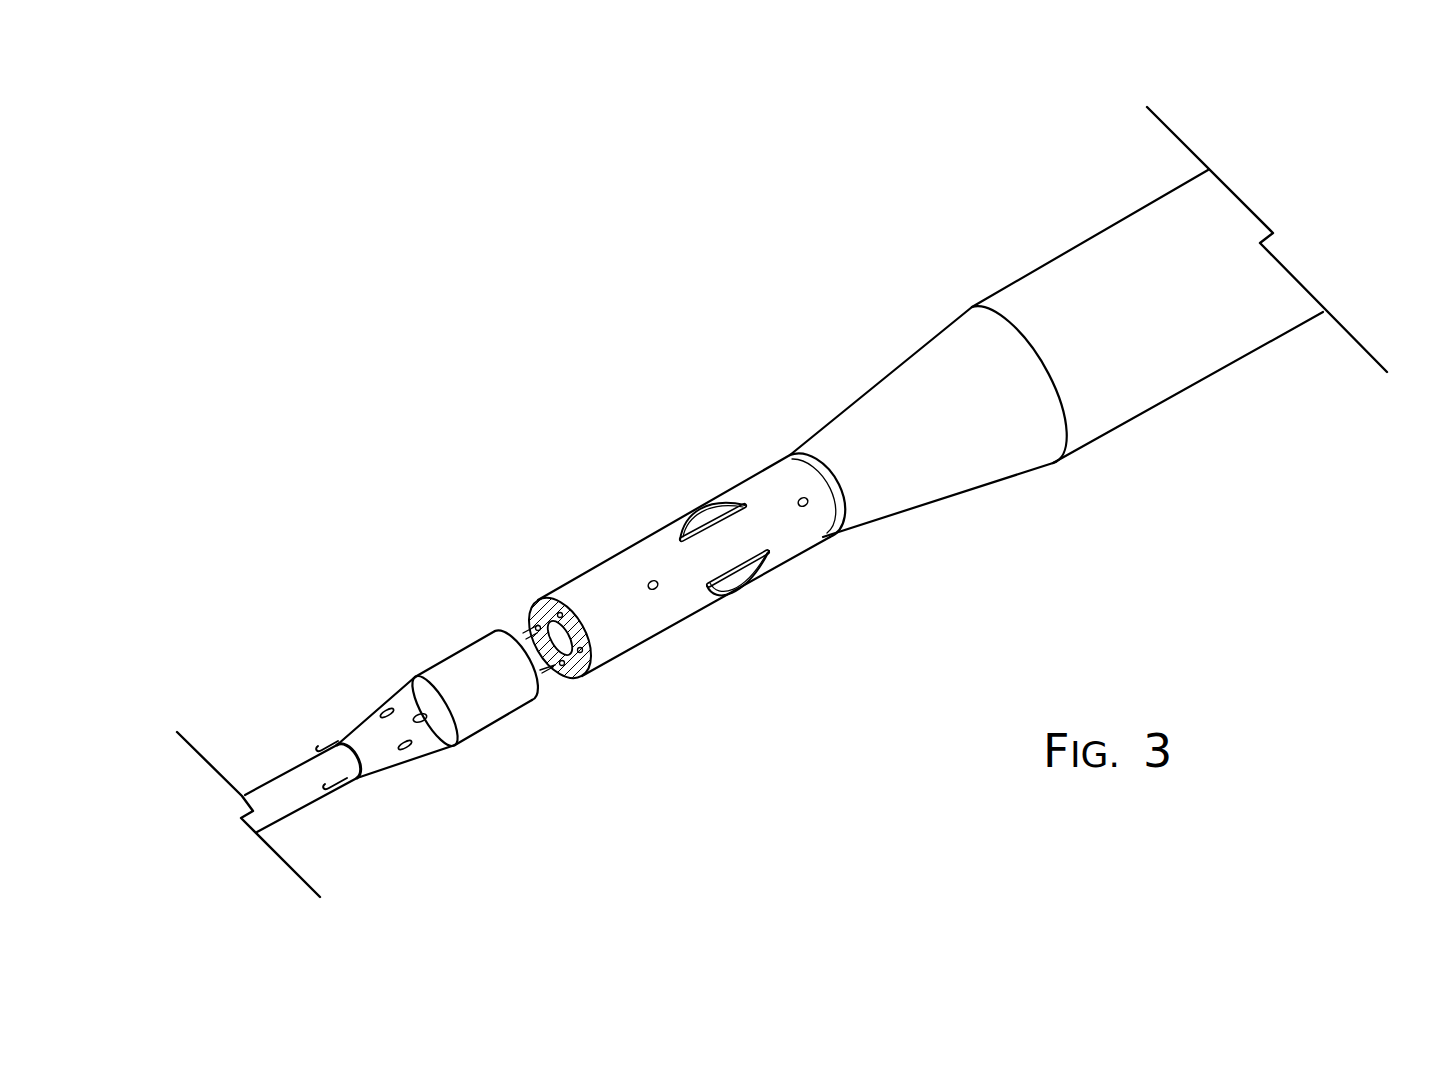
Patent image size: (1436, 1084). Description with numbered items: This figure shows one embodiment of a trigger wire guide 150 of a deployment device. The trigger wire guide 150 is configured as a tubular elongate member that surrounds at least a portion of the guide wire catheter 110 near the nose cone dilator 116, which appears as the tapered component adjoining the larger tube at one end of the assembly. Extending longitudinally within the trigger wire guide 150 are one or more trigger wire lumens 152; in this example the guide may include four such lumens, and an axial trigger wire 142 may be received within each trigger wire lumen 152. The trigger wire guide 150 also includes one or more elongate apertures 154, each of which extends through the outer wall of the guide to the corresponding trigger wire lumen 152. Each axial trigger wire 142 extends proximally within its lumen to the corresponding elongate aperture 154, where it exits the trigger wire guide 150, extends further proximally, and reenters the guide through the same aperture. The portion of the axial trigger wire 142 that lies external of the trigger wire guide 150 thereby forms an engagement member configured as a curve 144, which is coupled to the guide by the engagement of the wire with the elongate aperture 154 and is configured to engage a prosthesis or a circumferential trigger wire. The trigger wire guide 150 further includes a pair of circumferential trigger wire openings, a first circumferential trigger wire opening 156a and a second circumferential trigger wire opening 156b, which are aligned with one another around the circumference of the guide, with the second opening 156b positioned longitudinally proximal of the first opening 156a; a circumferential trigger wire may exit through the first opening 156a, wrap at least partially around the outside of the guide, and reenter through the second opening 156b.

The guide wire catheter 110 is at (288, 770).
The nose cone dilator 116 is at (943, 497).
The axial trigger wire 142 is at (352, 732).
The curve 144 is at (703, 508).
The trigger wire guide 150 is at (455, 655).
The trigger wire lumen 152 is at (407, 750).
The elongate aperture 154 is at (735, 503).
The first circumferential trigger wire opening 156a is at (655, 590).
The second circumferential trigger wire opening 156b is at (804, 508).